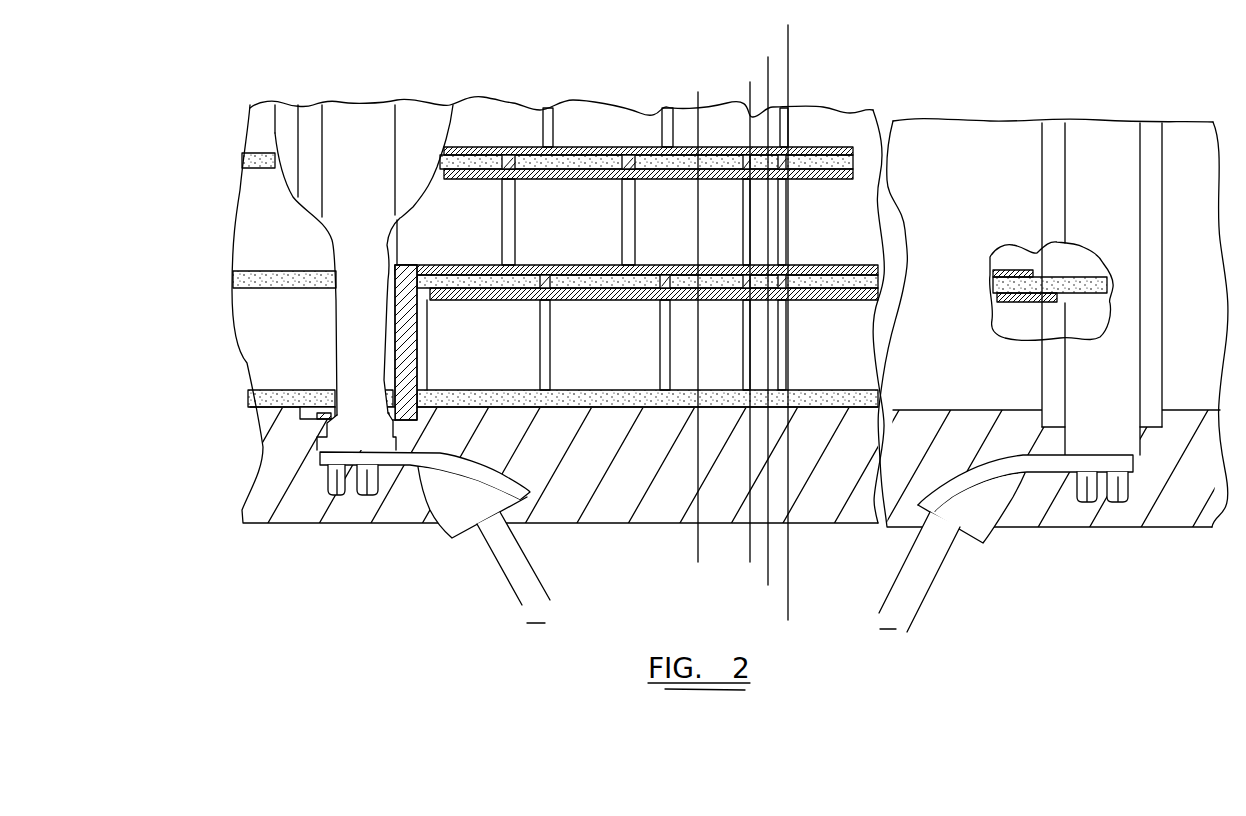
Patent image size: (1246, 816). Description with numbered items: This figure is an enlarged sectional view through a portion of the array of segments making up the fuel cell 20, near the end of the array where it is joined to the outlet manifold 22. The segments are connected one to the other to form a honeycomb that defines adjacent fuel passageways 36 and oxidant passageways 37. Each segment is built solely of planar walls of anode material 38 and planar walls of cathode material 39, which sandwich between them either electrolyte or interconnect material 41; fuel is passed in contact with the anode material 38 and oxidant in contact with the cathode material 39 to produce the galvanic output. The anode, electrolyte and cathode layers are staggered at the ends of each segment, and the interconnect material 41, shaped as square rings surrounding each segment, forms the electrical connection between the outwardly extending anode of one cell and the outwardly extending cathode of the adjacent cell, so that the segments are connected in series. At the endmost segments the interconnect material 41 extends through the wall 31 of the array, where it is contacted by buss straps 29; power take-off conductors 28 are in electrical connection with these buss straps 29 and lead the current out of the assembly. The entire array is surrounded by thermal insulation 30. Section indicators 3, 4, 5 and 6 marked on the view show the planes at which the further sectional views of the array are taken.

The fuel cell 20 is at (702, 61).
The outlet manifold 22 is at (229, 359).
The power take-off conductors 28 is at (491, 565).
The buss straps 29 is at (369, 164).
The thermal insulation 30 is at (846, 519).
The wall 31 is at (457, 398).
The fuel passageways 36 is at (513, 140).
The oxidant passageways 37 is at (467, 219).
The anode material 38 is at (803, 150).
The cathode material 39 is at (572, 270).
The interconnect material 41 is at (527, 268).
The section line 3 is at (690, 93).
The section line 4 is at (742, 93).
The section line 5 is at (760, 68).
The section line 6 is at (780, 44).